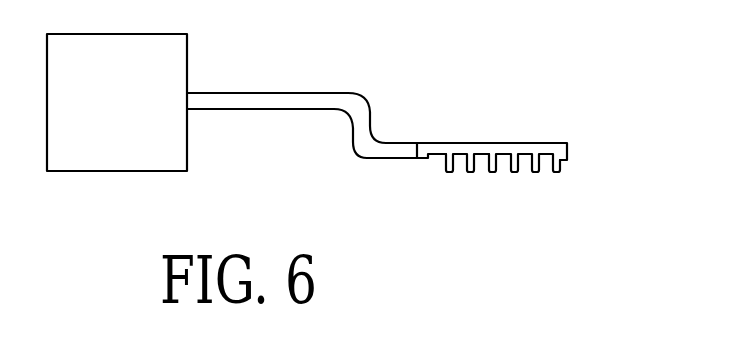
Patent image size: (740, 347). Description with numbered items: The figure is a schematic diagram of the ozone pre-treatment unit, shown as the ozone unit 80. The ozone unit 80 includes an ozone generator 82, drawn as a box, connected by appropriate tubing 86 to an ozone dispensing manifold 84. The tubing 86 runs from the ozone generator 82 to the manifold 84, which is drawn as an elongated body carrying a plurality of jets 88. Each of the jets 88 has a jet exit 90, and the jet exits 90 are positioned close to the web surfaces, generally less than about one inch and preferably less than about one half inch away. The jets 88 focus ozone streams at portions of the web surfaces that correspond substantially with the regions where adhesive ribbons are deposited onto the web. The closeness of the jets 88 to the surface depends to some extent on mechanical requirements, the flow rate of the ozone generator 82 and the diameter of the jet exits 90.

The ozone unit 80 is at (370, 58).
The ozone generator 82 is at (130, 107).
The ozone dispensing manifold 84 is at (526, 153).
The tubing 86 is at (255, 109).
The jets 88 is at (497, 168).
The jet exits 90 is at (448, 168).